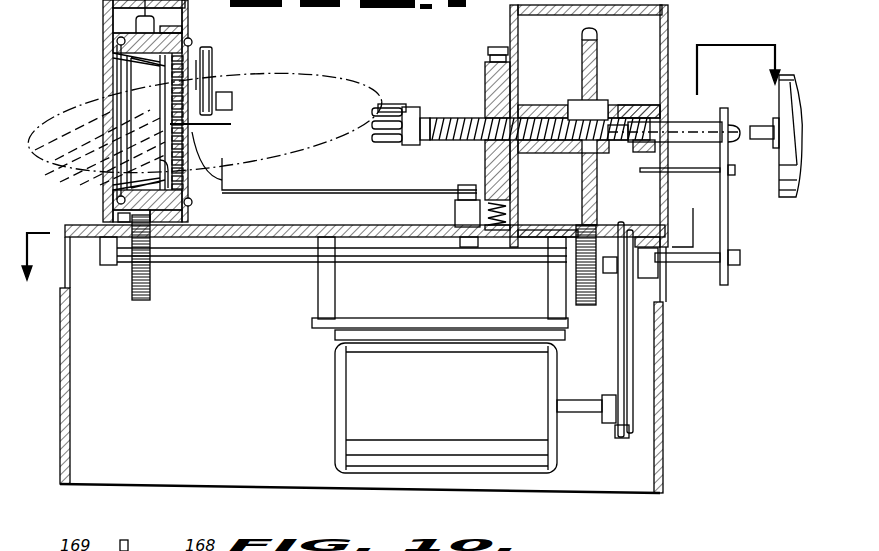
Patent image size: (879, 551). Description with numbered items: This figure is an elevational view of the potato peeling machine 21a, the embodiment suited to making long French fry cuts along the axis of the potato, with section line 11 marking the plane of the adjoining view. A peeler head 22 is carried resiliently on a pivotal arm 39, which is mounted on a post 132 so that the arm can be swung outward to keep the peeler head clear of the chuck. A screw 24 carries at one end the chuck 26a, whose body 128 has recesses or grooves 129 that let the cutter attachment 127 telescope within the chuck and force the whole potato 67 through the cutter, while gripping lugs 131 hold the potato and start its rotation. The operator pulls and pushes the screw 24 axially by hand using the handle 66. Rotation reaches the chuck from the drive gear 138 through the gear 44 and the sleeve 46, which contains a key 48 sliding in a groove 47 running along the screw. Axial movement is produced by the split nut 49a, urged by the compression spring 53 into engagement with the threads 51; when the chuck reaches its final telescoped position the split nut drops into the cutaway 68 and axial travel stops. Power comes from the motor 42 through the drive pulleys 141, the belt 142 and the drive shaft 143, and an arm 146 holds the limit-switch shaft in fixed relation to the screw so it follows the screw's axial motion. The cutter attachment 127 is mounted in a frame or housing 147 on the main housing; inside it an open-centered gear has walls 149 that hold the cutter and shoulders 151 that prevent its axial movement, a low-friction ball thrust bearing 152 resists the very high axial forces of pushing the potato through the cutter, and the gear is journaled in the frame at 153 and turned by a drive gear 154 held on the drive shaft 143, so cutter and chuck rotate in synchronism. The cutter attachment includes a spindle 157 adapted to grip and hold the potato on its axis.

The section line 11— 11 is at (396, 177).
The potato peeling machine 21a is at (672, 24).
The peeler head 22 is at (218, 56).
The screw 24 is at (450, 118).
The chuck 26a is at (398, 152).
The pivotal arm 39 is at (358, 195).
The motor 42 is at (358, 392).
The gear 44 is at (598, 60).
The sleeve 46 is at (618, 106).
The groove 47 is at (697, 128).
The key 48 is at (574, 100).
The split nut 49a is at (487, 147).
The threads 51 is at (440, 142).
The compression spring 53 is at (510, 210).
The handle 66 is at (790, 196).
The potato 67 is at (292, 62).
The cutaway 68 is at (636, 153).
The cutter attachment 127 is at (168, 107).
The body 128 is at (410, 107).
The recesses or grooves 129 is at (388, 104).
The gripping lugs 131 is at (378, 112).
The post 132 is at (458, 200).
The drive gear 138 is at (600, 228).
The drive pulleys 141 is at (617, 390).
The belt 142 is at (626, 356).
The drive shaft 143 is at (432, 265).
The arm 146 is at (728, 236).
The frame or housing 147 is at (112, 16).
The walls 149 is at (190, 203).
The shoulders 151 is at (166, 180).
The thrust bearing 152 is at (118, 48).
The journal 153 is at (188, 33).
The drive gear 154 is at (150, 280).
The spindle 157 is at (232, 127).